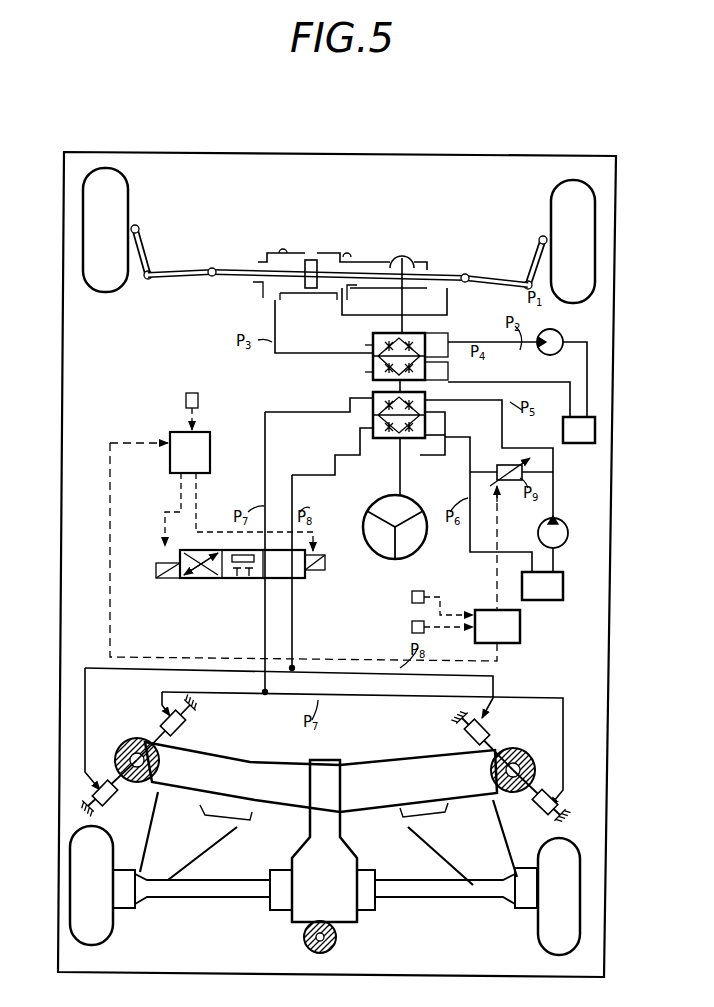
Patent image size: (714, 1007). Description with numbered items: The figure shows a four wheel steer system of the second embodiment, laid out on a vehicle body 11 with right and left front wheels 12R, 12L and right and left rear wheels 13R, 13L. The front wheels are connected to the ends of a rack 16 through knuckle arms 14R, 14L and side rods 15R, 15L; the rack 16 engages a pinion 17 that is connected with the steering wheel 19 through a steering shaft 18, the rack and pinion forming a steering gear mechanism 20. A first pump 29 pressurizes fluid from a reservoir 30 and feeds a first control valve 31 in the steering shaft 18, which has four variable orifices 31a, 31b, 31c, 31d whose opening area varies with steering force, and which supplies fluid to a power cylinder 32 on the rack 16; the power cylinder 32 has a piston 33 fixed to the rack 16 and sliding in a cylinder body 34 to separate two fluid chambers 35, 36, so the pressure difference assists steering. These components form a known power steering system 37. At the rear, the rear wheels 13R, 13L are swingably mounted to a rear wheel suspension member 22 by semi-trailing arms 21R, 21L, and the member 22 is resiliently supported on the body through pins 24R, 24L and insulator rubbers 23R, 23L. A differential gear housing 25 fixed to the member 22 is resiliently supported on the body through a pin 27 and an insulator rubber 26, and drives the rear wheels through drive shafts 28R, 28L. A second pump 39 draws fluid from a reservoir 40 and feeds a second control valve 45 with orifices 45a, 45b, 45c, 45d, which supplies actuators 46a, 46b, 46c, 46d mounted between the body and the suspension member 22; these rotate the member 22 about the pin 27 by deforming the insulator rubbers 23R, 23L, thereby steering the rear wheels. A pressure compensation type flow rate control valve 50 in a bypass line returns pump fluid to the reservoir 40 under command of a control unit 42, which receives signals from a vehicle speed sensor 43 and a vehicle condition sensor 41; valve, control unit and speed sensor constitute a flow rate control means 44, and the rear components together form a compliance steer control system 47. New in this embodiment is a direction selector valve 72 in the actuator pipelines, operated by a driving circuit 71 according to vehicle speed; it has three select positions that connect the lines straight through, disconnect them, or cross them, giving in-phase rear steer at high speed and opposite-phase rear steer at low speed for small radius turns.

The vehicle body 11 is at (424, 154).
The left front wheel 12L is at (118, 284).
The right front wheel 12R is at (588, 213).
The left rear wheel 13L is at (106, 938).
The right rear wheel 13R is at (545, 946).
The left knuckle arm 14L is at (142, 238).
The right knuckle arm 14R is at (536, 262).
The left side rod 15L is at (162, 280).
The right side rod 15R is at (495, 280).
The rack 16 is at (230, 270).
The pinion 17 is at (401, 256).
The steering shaft 18 is at (412, 301).
The steering wheel 19 is at (416, 545).
The steering gear mechanism 20 is at (418, 250).
The left semi-trailing arm 21L is at (196, 850).
The right semi-trailing arm 21R is at (452, 868).
The rear wheel suspension member 22 is at (352, 763).
The left insulator rubber 23L is at (126, 748).
The right insulator rubber 23R is at (507, 766).
The left pin 24L is at (143, 735).
The right pin 24R is at (486, 726).
The differential gear housing 25 is at (334, 897).
The insulator rubber 26 is at (306, 946).
The pin 27 is at (336, 946).
The left drive shaft 28L is at (206, 900).
The right drive shaft 28R is at (460, 900).
The first pump 29 is at (560, 340).
The reservoir 30 is at (596, 426).
The first control valve 31 is at (300, 372).
The variable orifice 31a is at (372, 344).
The variable orifice 31b is at (372, 372).
The variable orifice 31c is at (437, 340).
The variable orifice 31d is at (440, 367).
The power cylinder 32 is at (314, 250).
The piston 33 is at (311, 260).
The cylinder body 34 is at (345, 256).
The fluid chamber 35 is at (282, 252).
The fluid chamber 36 is at (394, 260).
The power steering system 37 is at (250, 302).
The second pump 39 is at (568, 534).
The reservoir 40 is at (553, 586).
The vehicle condition sensor 41 is at (410, 597).
The control unit 42 is at (520, 630).
The vehicle speed sensor 43 is at (410, 627).
The flow rate control means 44 is at (588, 516).
The second control valve 45 is at (322, 420).
The variable orifice 45a is at (372, 398).
The variable orifice 45b is at (372, 429).
The variable orifice 45c is at (432, 412).
The variable orifice 45d is at (420, 447).
The actuator 46a is at (182, 729).
The actuator 46b is at (112, 798).
The actuator 46c is at (468, 736).
The actuator 46d is at (540, 812).
The compliance steer control system 47 is at (262, 657).
The flow rate control valve 50 is at (498, 467).
The driving circuit 71 is at (170, 456).
The direction selector valve 72 is at (182, 580).